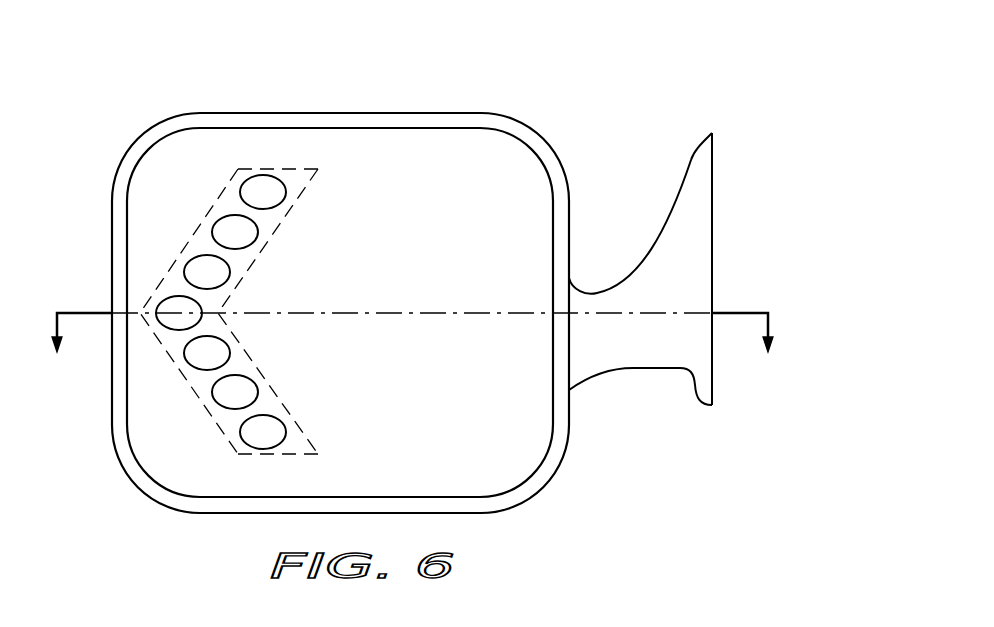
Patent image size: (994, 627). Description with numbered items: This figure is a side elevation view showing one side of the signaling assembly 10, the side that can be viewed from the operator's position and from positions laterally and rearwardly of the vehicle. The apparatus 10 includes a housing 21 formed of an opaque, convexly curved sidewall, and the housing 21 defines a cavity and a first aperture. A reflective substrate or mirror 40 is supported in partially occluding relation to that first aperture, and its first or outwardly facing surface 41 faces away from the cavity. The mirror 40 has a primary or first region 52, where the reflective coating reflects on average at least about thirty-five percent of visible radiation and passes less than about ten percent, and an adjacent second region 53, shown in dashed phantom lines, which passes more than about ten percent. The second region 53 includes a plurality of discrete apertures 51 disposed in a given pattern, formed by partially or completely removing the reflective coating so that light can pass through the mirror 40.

The signaling assembly 10 is at (473, 67).
The housing 21 is at (542, 137).
The reflective substrate or mirror 40 is at (492, 455).
The first or outwardly facing surface 41 is at (466, 274).
The aperture 51 is at (217, 270).
The first region 52 is at (466, 371).
The second region 53 is at (163, 277).